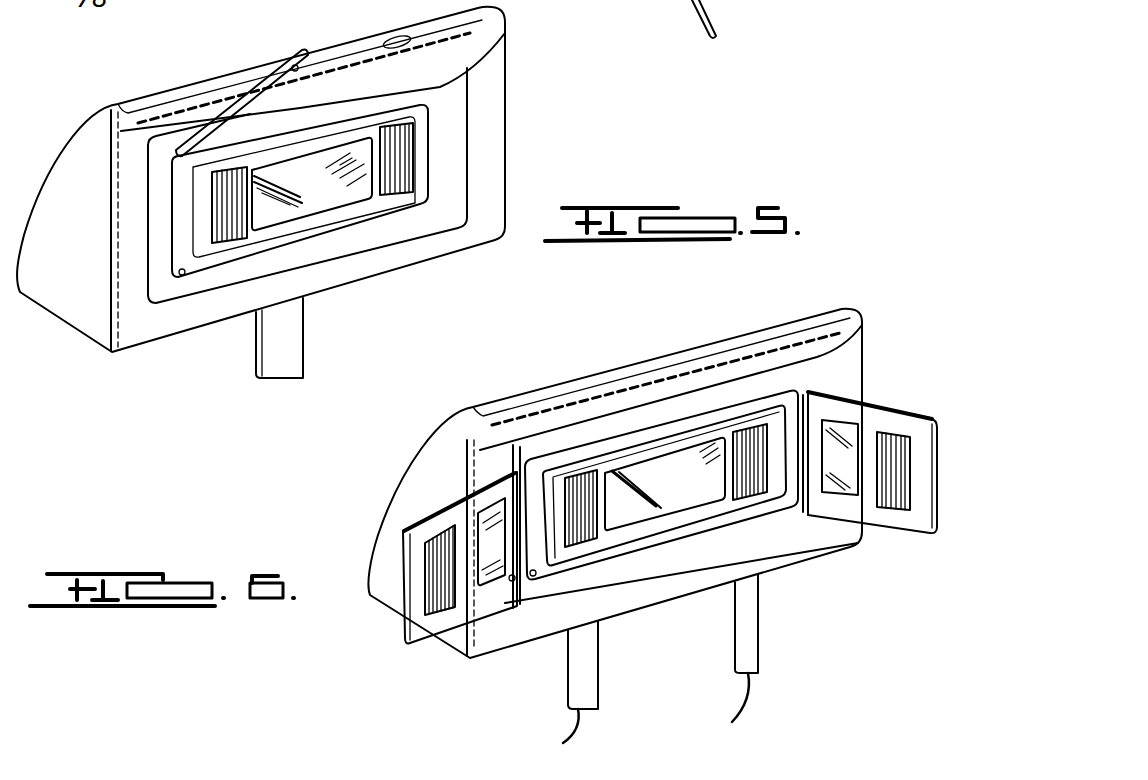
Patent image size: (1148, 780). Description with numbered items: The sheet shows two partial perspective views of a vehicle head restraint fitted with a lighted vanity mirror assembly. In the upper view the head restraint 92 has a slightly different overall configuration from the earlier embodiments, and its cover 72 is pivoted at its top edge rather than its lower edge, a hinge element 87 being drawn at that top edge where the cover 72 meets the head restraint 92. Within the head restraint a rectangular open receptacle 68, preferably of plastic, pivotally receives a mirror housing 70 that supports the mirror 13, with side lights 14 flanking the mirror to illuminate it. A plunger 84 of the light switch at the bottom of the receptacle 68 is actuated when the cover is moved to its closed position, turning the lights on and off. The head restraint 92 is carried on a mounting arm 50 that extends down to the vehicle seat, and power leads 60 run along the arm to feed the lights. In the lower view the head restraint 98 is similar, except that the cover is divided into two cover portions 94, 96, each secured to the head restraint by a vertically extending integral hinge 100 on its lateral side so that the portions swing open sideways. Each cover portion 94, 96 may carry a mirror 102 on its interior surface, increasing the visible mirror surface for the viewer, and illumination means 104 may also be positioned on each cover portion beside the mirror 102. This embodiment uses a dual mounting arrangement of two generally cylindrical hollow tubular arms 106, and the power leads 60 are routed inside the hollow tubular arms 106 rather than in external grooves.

In FIG. 5, the mirror 13 is at (353, 190).
In FIG. 6, the mirror 13 is at (690, 488).
In FIG. 5, the side lights 14 is at (230, 242).
In FIG. 6, the side lights 14 is at (588, 543).
In FIG. 5, the mounting arms 50 is at (295, 346).
In FIG. 5, the power leads 60 is at (710, 13).
In FIG. 6, the power leads 60 is at (745, 698).
In FIG. 5, the rectangular open receptacle 68 is at (441, 167).
In FIG. 6, the rectangular open receptacle 68 is at (718, 425).
In FIG. 5, the mirror housing 70 is at (330, 213).
In FIG. 6, the mirror housing 70 is at (627, 455).
In FIG. 5, the cover 72 is at (370, 95).
In FIG. 5, the plunger 84 is at (182, 276).
In FIG. 5, the strut 87 is at (300, 58).
In FIG. 5, the head restraint 92 is at (82, 310).
In FIG. 6, the cover portion 94 is at (430, 623).
In FIG. 6, the cover portion 96 is at (913, 525).
In FIG. 6, the head restraint 98 is at (407, 472).
In FIG. 6, the integral hinge 100 is at (520, 465).
In FIG. 6, the mirror 102 is at (493, 583).
In FIG. 6, the illumination means 104 is at (437, 573).
In FIG. 6, the hollow tubular arms 106 is at (738, 626).